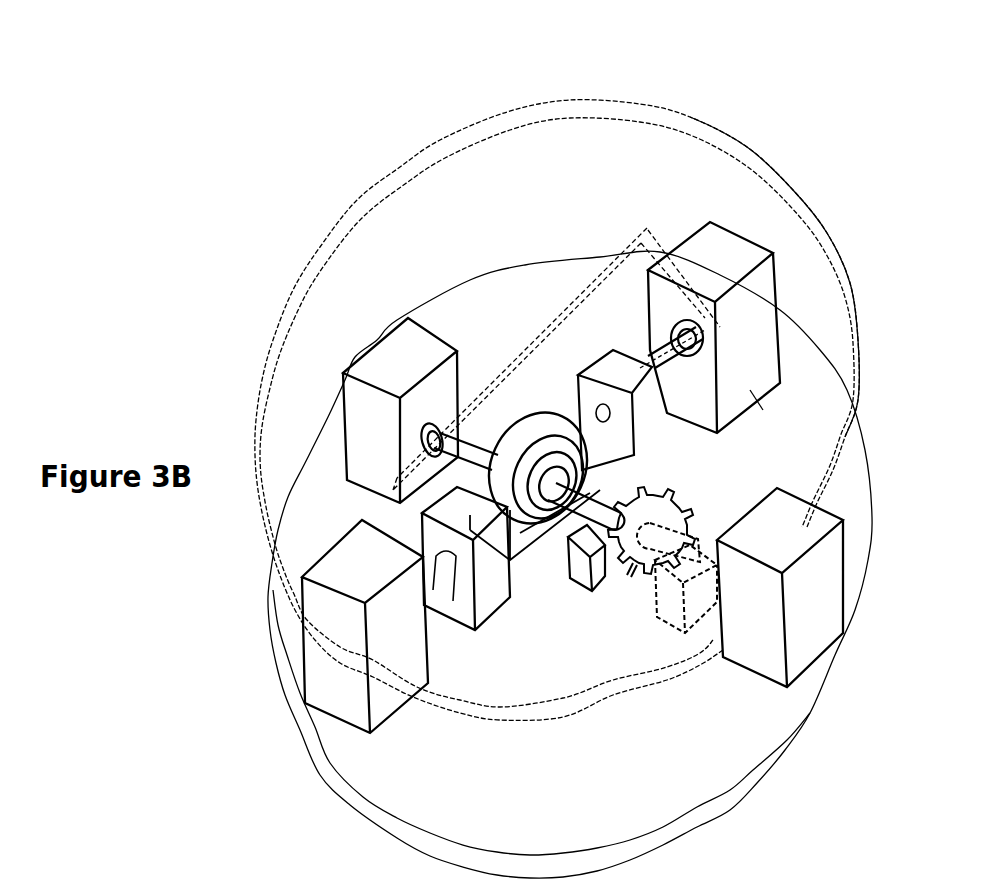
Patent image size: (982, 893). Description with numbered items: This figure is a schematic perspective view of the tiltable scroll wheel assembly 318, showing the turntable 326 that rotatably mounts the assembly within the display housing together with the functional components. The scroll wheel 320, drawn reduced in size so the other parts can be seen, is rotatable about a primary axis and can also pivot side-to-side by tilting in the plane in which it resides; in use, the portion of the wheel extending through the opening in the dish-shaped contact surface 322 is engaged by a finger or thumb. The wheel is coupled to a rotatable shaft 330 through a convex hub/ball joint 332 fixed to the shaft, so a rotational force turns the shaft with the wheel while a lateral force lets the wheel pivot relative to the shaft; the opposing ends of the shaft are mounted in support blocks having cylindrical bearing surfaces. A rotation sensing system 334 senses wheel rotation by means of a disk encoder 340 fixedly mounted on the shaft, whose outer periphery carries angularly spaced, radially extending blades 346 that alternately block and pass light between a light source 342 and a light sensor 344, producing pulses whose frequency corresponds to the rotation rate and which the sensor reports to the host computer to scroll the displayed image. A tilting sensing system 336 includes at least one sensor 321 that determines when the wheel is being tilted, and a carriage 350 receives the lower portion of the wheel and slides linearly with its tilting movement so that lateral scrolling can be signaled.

The scroll wheel assembly 318 is at (812, 128).
The scroll wheel 320 is at (532, 423).
The sensor 321 is at (322, 660).
The contact surface 322 is at (818, 287).
The turntable 326 is at (634, 287).
The rotatable shaft 330 is at (467, 440).
The convex hub/ball joint 332 is at (546, 500).
The rotation sensing system 334 is at (418, 338).
The tilting sensing system 336 is at (807, 510).
The disk encoder 340 is at (633, 573).
The light source 342 is at (582, 573).
The light sensor 344 is at (673, 615).
The blades 346 is at (673, 498).
The carriage 350 is at (595, 370).